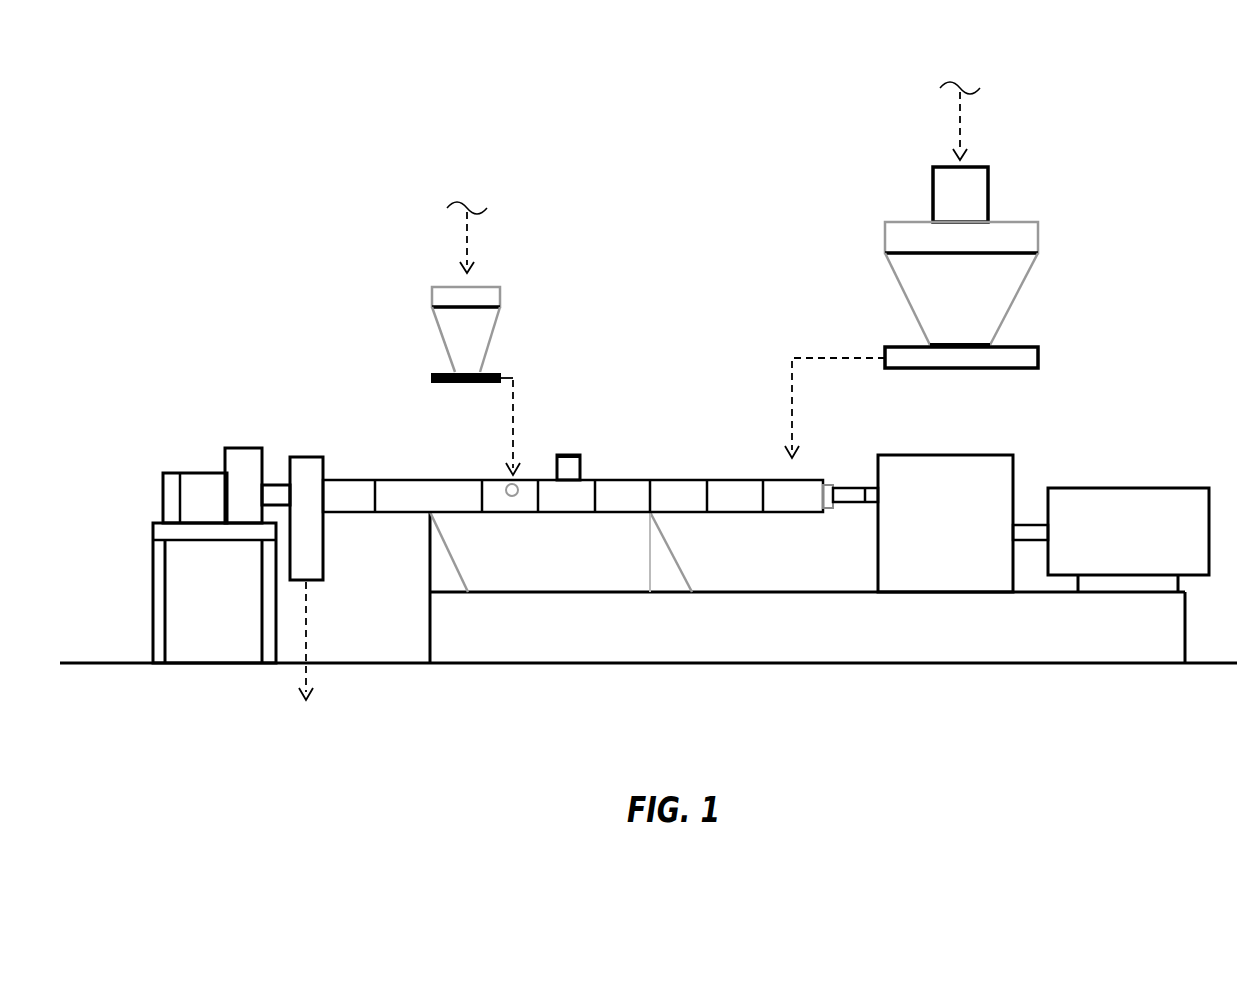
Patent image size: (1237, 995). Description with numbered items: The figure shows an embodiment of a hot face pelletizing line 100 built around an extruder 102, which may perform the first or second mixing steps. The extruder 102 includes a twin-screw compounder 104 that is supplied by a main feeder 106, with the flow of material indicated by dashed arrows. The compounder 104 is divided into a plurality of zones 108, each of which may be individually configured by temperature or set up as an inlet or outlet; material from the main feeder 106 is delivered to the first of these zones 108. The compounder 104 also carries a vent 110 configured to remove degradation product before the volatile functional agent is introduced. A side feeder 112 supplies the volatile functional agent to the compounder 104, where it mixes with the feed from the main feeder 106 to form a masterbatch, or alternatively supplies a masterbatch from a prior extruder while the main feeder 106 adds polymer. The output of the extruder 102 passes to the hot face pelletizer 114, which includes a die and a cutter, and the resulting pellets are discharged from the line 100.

The hot face pelletizing line 100 is at (198, 170).
The extruder 102 is at (1112, 447).
The twin-screw compounder 104 is at (763, 480).
The main feeder 106 is at (885, 232).
The zones 108 is at (735, 514).
The vent 110 is at (581, 462).
The side feeder 112 is at (500, 293).
The hot face pelletizer 114 is at (308, 455).